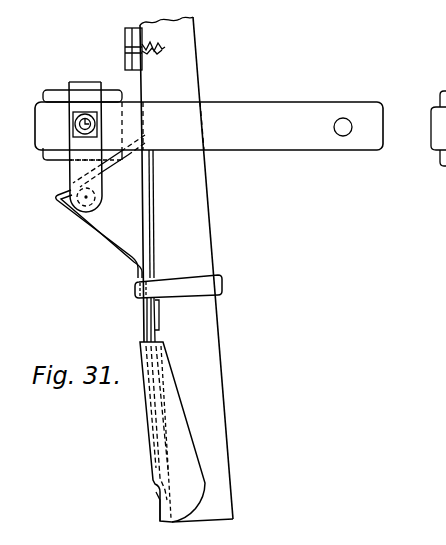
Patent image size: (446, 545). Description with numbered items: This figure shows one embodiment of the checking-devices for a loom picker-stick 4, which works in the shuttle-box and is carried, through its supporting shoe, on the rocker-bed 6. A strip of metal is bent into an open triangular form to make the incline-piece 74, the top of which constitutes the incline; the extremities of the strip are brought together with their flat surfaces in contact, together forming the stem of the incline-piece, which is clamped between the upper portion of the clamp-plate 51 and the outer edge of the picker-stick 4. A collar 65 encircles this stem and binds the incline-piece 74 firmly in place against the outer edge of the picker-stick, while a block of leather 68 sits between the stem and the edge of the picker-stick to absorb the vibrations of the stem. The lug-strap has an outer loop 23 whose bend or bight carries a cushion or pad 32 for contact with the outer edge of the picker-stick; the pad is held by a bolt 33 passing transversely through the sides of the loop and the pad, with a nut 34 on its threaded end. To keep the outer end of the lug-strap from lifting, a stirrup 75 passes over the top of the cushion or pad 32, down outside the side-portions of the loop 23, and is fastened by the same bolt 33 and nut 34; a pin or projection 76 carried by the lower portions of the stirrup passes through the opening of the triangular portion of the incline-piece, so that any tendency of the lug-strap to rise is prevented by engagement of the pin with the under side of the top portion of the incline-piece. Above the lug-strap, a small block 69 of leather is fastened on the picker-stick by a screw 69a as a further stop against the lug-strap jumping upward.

The picker-stick 4 is at (210, 222).
The rocker-bed 6 is at (154, 432).
The outer loop of the lug-strap 23 is at (252, 100).
The cushion or pad 32 is at (106, 90).
The bolt 33 is at (75, 125).
The nut 34 is at (74, 108).
The blade edge 51 is at (160, 498).
The collar 65 is at (220, 288).
The block of leather 68 is at (155, 315).
The block 69 is at (123, 30).
The screw 69a is at (125, 42).
The incline-piece 74 is at (106, 238).
The stirrup 75 is at (80, 168).
The pin or projection 76 is at (97, 203).